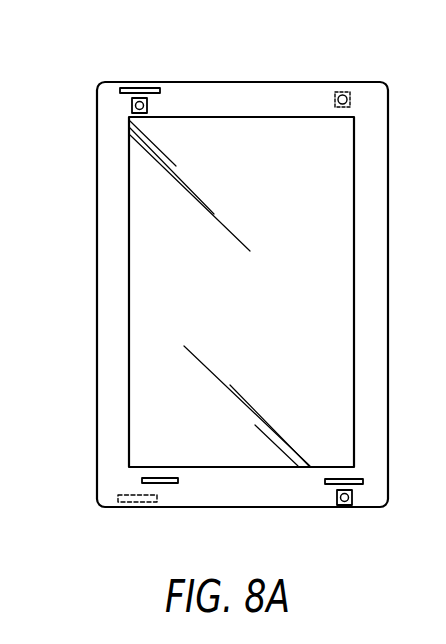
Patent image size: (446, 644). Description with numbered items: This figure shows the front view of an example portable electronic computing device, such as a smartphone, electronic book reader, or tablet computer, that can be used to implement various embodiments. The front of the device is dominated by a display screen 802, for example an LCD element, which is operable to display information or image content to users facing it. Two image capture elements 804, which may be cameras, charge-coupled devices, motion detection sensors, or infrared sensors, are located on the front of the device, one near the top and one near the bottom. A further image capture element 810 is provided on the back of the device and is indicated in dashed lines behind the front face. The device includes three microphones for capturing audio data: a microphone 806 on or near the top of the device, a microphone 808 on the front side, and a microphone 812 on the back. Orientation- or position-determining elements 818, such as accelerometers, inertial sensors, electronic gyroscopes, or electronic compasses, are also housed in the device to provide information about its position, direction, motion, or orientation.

The display screen 802 is at (130, 346).
The image capture elements 804 is at (131, 106).
The microphone 806 is at (149, 87).
The microphone 808 is at (365, 482).
The image capture element 810 is at (342, 91).
The microphone 812 is at (168, 486).
The orientation- or position-determining elements 818 is at (138, 504).